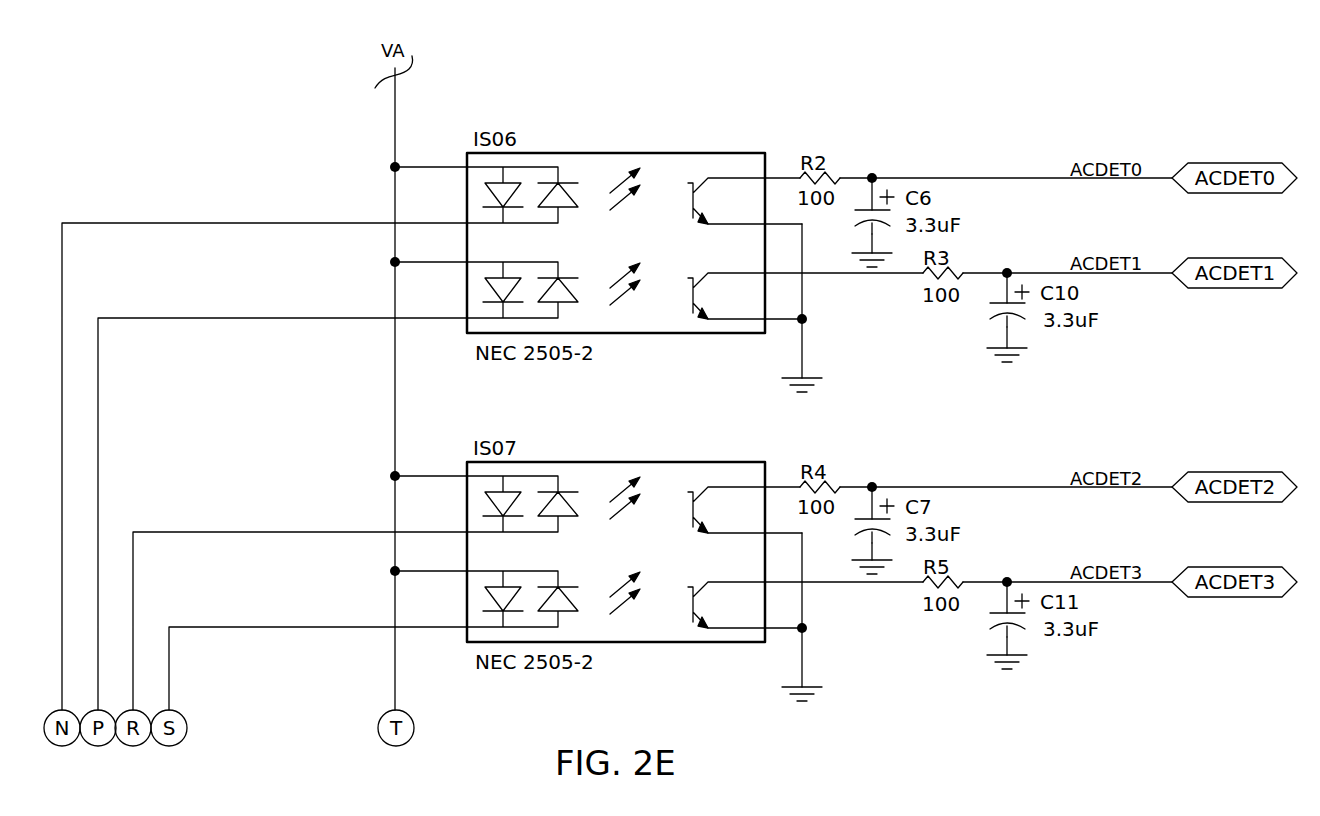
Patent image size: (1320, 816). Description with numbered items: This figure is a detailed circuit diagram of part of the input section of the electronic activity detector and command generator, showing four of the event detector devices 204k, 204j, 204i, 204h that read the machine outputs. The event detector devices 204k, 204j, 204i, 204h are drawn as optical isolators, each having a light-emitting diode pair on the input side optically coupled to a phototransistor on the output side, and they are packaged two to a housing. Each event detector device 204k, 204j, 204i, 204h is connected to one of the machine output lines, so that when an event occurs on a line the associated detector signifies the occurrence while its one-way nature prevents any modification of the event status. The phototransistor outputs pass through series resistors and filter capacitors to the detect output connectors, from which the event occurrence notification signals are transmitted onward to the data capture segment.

The event detector device 204k is at (660, 172).
The event detector device 204j is at (622, 320).
The event detector device 204i is at (660, 481).
The event detector device 204h is at (622, 629).